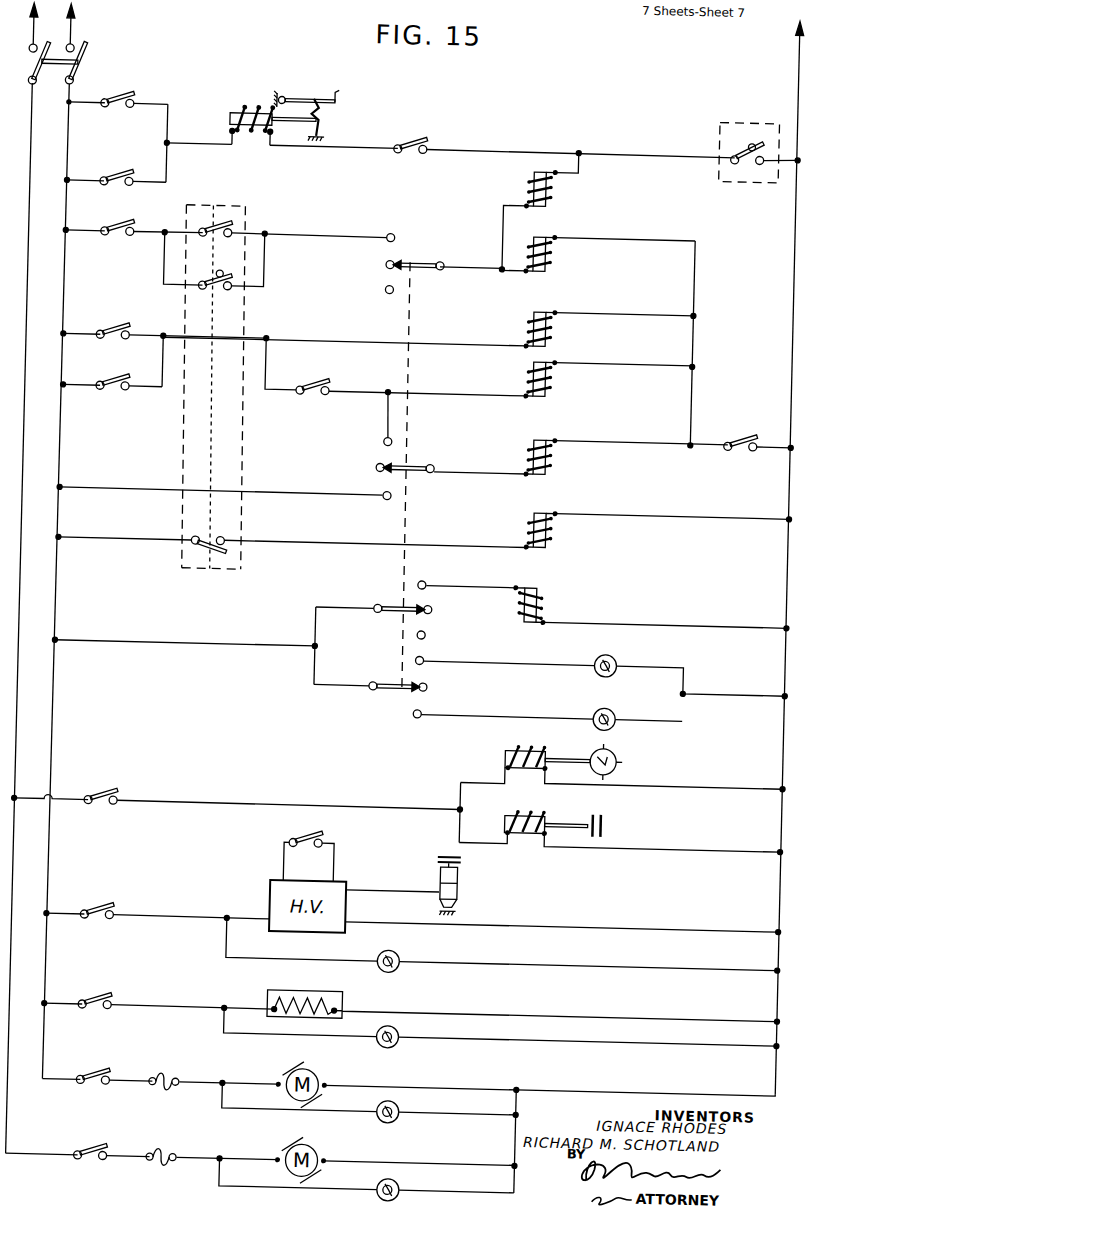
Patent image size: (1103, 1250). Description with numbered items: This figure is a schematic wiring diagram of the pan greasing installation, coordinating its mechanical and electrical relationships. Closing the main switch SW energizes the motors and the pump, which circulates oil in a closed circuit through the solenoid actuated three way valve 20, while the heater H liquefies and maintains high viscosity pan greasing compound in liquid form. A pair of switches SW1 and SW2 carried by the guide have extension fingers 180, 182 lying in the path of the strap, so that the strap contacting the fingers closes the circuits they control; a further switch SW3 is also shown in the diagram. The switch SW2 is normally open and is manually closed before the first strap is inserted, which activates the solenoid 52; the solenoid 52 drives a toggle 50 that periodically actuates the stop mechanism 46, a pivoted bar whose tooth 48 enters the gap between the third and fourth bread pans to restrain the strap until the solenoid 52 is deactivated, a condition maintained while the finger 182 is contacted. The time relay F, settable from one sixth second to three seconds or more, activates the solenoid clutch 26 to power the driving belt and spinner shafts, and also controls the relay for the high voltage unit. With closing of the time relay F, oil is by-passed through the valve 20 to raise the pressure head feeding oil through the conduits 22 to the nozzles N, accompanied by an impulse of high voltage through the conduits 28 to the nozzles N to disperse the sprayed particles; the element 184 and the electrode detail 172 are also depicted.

The main switch SW is at (74, 53).
The switch SW1 is at (737, 114).
The switch SW2 is at (220, 210).
The switch SW3 is at (410, 465).
The solenoid 52 is at (226, 113).
The stop mechanism 46 is at (285, 101).
The tooth 48 is at (338, 92).
The toggle 50 is at (311, 115).
The extension finger 180 is at (707, 130).
The extension finger 182 is at (215, 272).
The switch contact 184 is at (382, 501).
The time relay F is at (587, 380).
The solenoid actuated three way valve 20 is at (620, 745).
The solenoid clutch 26 is at (654, 824).
The conduits 28 is at (406, 890).
The conduits 22 is at (484, 869).
The nozzles N is at (470, 891).
The electrode tip 172 is at (464, 909).
The heater H is at (308, 1003).